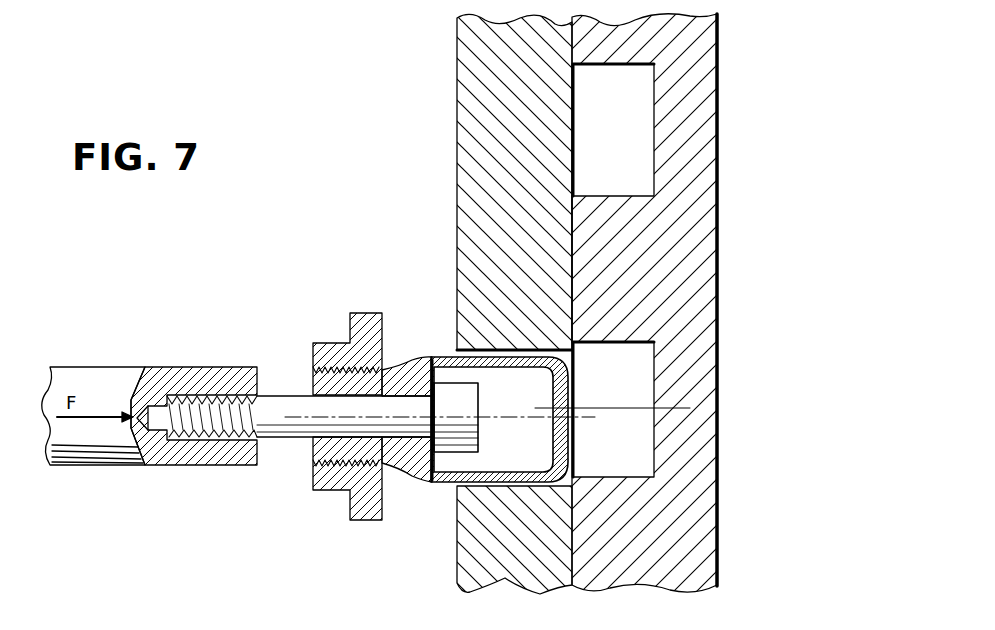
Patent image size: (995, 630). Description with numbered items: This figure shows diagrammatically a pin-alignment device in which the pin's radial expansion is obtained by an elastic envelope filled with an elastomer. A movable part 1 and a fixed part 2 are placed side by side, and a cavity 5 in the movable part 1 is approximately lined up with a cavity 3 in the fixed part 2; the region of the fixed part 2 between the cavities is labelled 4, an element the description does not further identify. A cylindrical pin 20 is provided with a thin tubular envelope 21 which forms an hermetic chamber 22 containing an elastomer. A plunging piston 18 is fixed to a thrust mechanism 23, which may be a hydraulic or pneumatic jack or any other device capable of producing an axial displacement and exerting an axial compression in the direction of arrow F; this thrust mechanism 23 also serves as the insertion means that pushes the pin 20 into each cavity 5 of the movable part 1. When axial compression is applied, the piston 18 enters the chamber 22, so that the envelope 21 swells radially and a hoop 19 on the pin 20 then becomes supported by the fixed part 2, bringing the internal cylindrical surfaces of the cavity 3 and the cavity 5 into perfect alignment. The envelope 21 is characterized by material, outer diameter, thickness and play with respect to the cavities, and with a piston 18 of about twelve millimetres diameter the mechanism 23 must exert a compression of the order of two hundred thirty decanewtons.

The movable part 1 is at (718, 60).
The fixed part 2 is at (457, 93).
The cavity 3 is at (455, 486).
The web 4 is at (572, 258).
The cavity 5 is at (642, 124).
The plunging piston 18 is at (420, 420).
The hoop 19 is at (352, 322).
The cylindrical pin 20 is at (232, 326).
The thin tubular envelope 21 is at (442, 480).
The hermetic chamber 22 is at (508, 388).
The thrust mechanism 23 is at (90, 377).